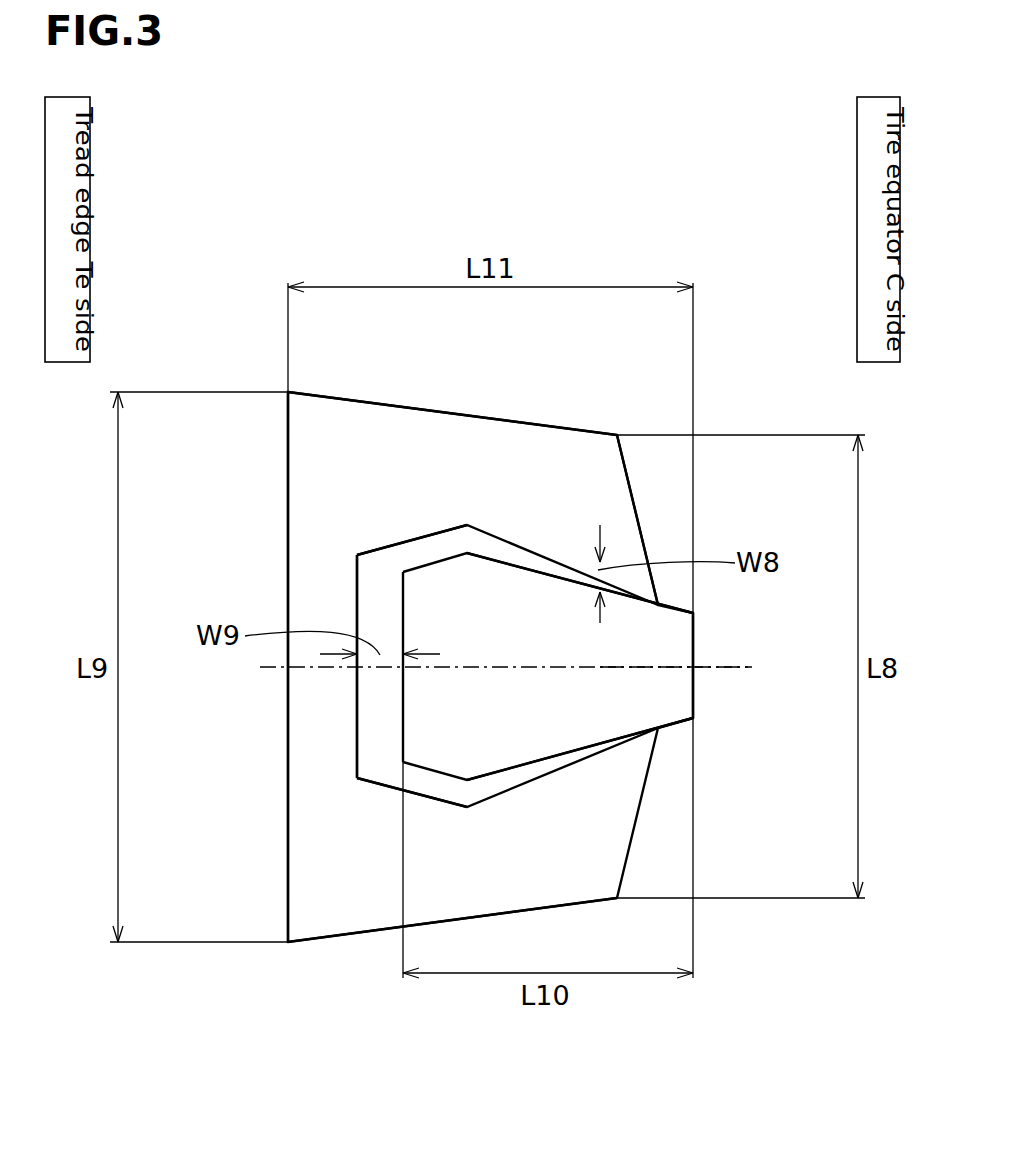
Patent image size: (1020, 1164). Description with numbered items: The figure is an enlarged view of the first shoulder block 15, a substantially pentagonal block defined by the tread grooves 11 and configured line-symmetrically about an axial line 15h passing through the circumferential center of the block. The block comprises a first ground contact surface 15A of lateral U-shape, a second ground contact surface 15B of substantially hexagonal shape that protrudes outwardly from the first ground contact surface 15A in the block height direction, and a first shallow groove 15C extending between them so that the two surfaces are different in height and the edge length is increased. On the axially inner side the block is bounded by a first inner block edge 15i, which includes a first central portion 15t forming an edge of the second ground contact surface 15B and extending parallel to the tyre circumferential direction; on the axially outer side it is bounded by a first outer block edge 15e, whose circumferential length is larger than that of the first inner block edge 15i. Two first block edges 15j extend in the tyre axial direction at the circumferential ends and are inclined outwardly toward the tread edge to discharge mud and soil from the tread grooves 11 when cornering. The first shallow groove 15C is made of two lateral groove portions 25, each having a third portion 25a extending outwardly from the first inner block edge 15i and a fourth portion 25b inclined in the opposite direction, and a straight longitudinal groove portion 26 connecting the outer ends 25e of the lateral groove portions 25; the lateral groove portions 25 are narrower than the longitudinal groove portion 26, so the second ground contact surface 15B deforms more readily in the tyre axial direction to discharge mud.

The first shoulder block 15 is at (342, 970).
The first ground contact surface 15A is at (330, 883).
The second ground contact surface 15B is at (518, 603).
The first shallow groove 15C is at (372, 605).
The first outer block edge 15e is at (288, 760).
The axial line 15h is at (727, 667).
The first inner block edge 15i is at (632, 497).
The first block edges 15j is at (333, 395).
The first central portion 15t is at (695, 697).
The lateral groove portions 25 is at (490, 545).
The third portion 25a is at (580, 762).
The fourth portion 25b is at (435, 787).
The outer ends 25e is at (380, 566).
The longitudinal groove portion 26 is at (380, 677).
The tread grooves 11 is at (829, 870).